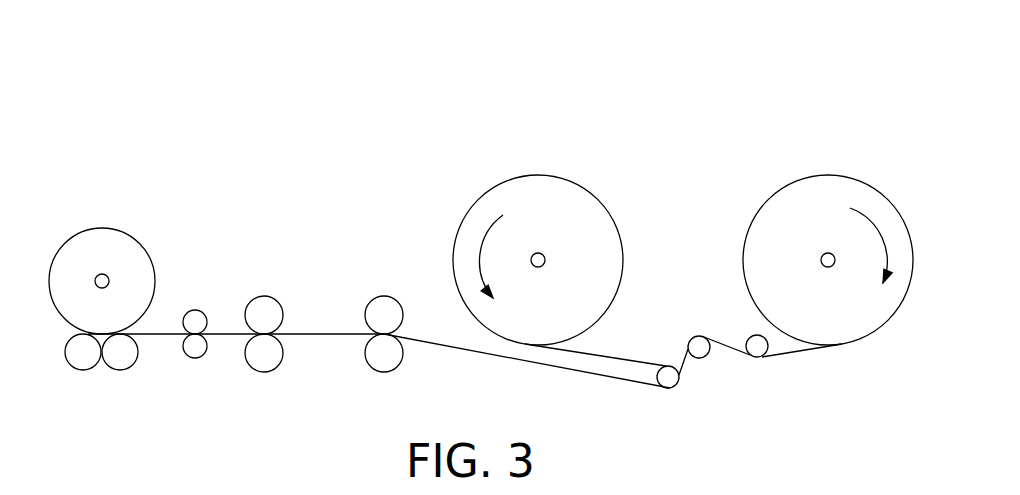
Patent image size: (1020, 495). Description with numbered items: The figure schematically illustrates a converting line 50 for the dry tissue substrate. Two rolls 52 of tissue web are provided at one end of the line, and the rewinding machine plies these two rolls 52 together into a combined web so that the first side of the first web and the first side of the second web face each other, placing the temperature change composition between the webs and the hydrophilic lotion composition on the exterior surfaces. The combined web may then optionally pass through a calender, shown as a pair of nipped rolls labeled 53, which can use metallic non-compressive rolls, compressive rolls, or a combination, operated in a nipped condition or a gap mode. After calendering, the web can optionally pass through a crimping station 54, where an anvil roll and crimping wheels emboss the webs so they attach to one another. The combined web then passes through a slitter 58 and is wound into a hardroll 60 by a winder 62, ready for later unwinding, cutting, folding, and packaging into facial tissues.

The converting line 50 is at (642, 98).
The rolls of tissue web 52 is at (765, 222).
The nip roller pair 53 is at (383, 287).
The crimping station 54 is at (270, 287).
The slitter 58 is at (195, 292).
The hardroll 60 is at (107, 238).
The winder 62 is at (100, 377).